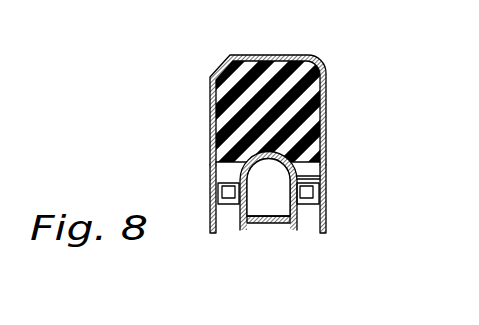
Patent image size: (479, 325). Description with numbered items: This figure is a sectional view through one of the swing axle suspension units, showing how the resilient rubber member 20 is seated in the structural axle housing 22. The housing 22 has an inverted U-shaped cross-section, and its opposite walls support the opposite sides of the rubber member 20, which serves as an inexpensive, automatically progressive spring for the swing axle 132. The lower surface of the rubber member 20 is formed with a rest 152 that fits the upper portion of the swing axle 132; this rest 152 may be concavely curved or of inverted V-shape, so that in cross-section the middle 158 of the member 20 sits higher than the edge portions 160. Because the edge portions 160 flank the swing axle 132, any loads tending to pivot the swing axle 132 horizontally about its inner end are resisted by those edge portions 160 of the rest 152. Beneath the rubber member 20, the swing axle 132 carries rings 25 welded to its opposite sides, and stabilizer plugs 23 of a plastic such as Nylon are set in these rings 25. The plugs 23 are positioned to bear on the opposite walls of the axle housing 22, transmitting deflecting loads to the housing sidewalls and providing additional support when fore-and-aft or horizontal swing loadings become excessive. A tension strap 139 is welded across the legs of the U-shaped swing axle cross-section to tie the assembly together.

The rubber member 20 is at (268, 87).
The structural axle housing 22 is at (327, 85).
The stabilizer plugs 23 is at (218, 192).
The rings 25 is at (224, 218).
The swing axle 132 is at (327, 183).
The tension strap 139 is at (268, 225).
The rest 152 is at (277, 131).
The middle 158 is at (268, 191).
The edge portions 160 is at (209, 168).